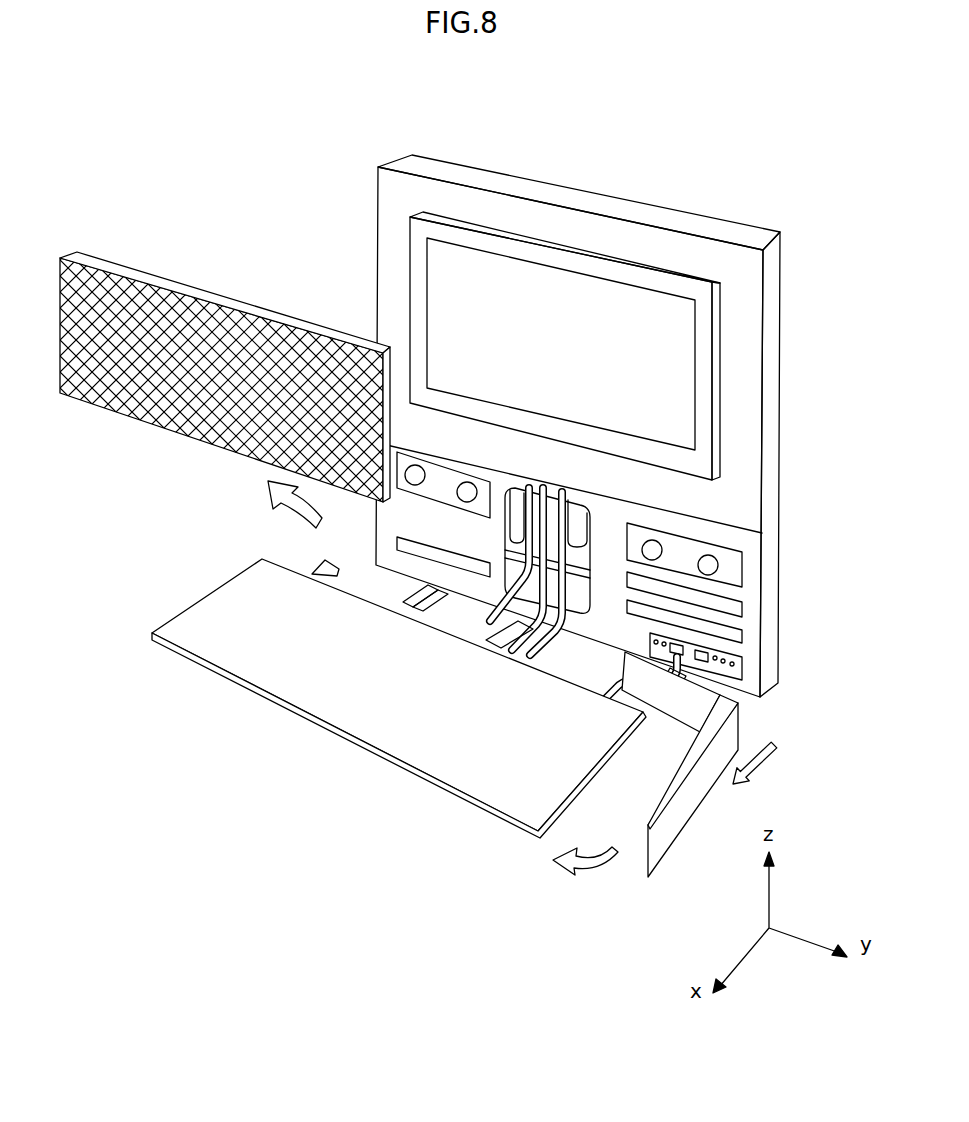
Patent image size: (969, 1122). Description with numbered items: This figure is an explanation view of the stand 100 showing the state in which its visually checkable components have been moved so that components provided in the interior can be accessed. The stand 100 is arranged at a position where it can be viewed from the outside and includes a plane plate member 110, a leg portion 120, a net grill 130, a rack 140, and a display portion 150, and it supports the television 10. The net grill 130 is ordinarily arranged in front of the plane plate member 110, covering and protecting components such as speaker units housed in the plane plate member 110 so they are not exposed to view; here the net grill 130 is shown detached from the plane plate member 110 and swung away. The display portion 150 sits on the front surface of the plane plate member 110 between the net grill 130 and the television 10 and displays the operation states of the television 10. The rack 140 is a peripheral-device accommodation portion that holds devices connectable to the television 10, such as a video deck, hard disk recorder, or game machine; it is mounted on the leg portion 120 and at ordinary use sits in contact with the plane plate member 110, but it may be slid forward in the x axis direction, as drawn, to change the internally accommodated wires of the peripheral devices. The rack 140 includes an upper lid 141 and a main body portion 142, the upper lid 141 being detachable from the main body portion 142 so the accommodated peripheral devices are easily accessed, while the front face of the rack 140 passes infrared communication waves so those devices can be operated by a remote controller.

The stand 100 is at (627, 140).
The television 10 is at (489, 231).
The plane plate member 110 is at (745, 325).
The leg portion 120 is at (417, 598).
The net grill 130 is at (147, 305).
The rack 140 is at (464, 769).
The upper lid 141 is at (635, 843).
The main body portion 142 is at (650, 927).
The display portion 150 is at (750, 538).